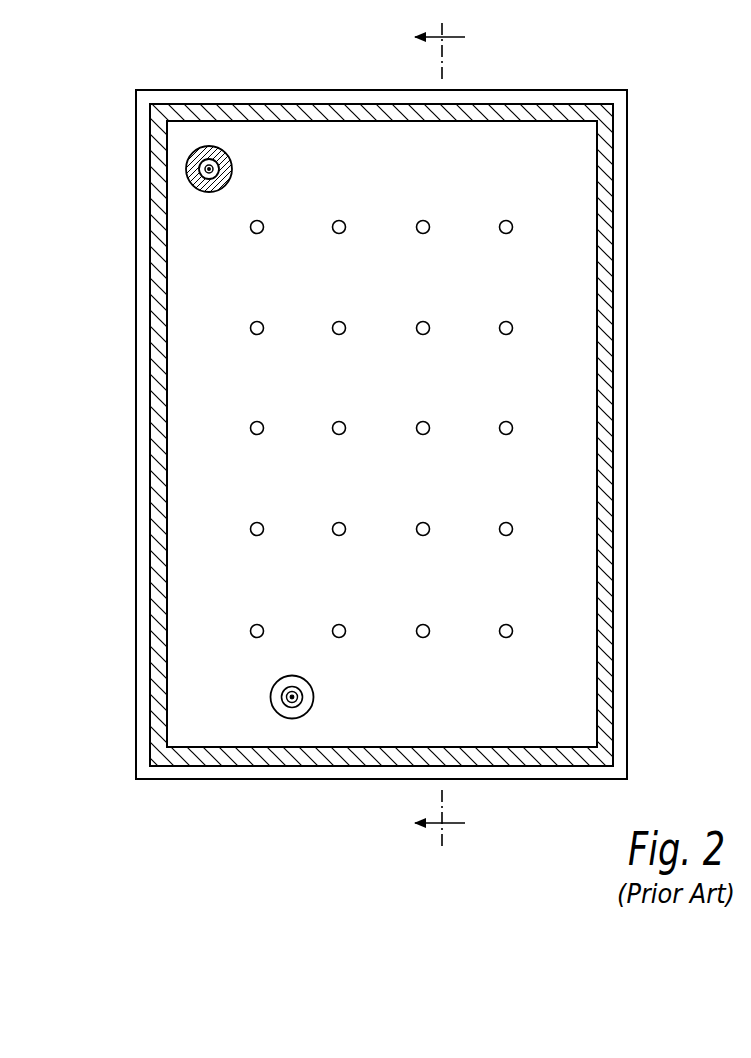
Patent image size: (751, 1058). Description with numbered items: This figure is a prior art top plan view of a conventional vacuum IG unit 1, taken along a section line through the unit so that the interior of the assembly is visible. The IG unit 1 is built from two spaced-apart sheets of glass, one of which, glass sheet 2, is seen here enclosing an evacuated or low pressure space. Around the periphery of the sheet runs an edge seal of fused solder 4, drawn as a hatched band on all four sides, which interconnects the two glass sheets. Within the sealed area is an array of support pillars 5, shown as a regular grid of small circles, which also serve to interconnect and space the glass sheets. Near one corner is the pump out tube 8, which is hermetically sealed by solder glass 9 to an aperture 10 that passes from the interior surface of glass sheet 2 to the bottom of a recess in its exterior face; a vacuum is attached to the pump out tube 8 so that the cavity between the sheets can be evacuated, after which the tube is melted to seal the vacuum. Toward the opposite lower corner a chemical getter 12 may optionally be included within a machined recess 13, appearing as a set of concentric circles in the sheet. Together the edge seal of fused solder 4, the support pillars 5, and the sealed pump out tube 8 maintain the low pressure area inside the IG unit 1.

The IG unit 1 is at (374, 449).
The sheet of glass 2 is at (345, 98).
The edge seal of fused solder 4 is at (247, 115).
The support pillars 5 is at (514, 327).
The pump out tube 8 is at (155, 252).
The solder glass 9 is at (212, 197).
The aperture 10 is at (198, 185).
The chemical getter 12 is at (292, 697).
The machined recess 13 is at (299, 745).